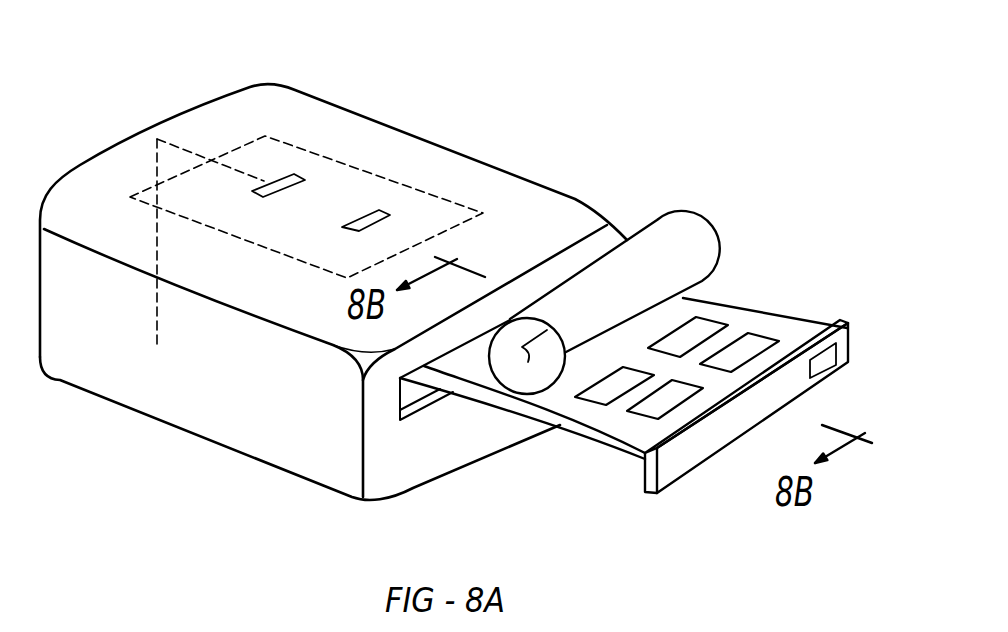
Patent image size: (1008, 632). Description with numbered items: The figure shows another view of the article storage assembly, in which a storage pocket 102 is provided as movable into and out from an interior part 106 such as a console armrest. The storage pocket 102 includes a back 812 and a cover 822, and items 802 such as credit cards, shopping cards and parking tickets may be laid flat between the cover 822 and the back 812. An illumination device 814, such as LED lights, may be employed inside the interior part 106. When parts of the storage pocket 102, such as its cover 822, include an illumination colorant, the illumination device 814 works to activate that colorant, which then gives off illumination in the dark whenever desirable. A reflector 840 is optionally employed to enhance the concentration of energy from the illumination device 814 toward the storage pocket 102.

The storage pocket 102 is at (721, 474).
The interior part 106 is at (145, 378).
The items 802 is at (703, 325).
The back 812 is at (591, 432).
The illumination device 814 is at (380, 212).
The cover 822 is at (697, 240).
The reflector 840 is at (427, 212).